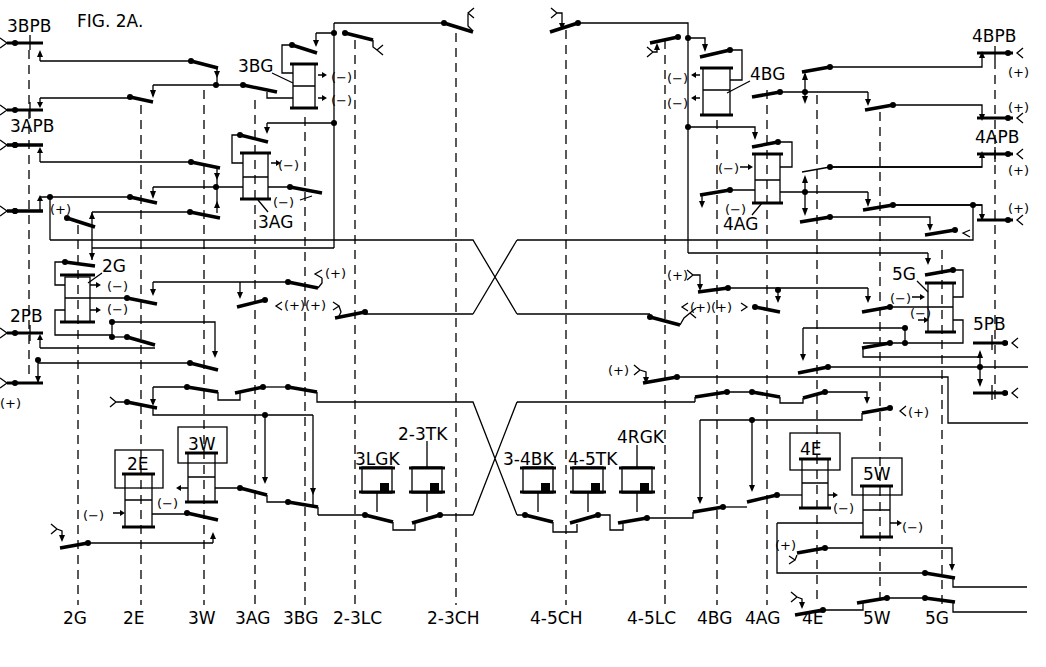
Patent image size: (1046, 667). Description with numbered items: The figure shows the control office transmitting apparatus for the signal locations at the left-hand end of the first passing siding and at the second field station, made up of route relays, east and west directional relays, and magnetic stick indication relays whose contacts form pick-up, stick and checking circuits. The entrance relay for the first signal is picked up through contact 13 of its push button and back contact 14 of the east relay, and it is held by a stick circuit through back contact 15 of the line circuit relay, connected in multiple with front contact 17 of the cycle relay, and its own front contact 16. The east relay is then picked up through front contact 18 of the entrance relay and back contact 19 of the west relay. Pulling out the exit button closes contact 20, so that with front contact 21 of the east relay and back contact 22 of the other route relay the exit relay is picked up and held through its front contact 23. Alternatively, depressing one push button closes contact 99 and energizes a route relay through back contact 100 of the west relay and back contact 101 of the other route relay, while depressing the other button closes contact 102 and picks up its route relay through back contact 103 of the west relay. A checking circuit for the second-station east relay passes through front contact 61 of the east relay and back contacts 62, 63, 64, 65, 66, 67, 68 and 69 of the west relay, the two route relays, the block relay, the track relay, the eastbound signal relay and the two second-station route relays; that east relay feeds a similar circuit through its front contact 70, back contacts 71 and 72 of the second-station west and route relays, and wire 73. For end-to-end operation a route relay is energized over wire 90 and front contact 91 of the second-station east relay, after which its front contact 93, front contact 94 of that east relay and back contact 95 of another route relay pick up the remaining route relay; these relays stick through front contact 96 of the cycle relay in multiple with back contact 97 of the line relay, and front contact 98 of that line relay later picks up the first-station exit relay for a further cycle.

The contact of button 3BPB 99 is at (95, 53).
The back contact of relay 3W 100 is at (205, 61).
The back contact of relay 3AG 101 is at (251, 95).
The contact of button 3APB 102 is at (21, 160).
The back contact of relay 3W 103 is at (207, 160).
The front contact of relay 2E 21 is at (139, 197).
The contact of button 3APB 20 is at (25, 222).
The front contact of relay 3AG 23 is at (247, 138).
The back contact of relay 3BG 22 is at (308, 182).
The back contact of relay 2-3LC 15 is at (373, 54).
The front contact of relay 2-3CH 17 is at (450, 31).
The front contact of relay 4-5CH 96 is at (556, 29).
The back contact of relay 4-5LC 97 is at (648, 57).
The back contact of relay 4BG 95 is at (722, 187).
The front contact of relay 4E 94 is at (866, 228).
The front contact of relay 5G 93 is at (926, 234).
The front contact of relay 2G 16 is at (75, 252).
The back contact of relay 2E 14 is at (152, 341).
The contact of button 2PB 13 is at (95, 362).
The front contact of relay 2E 61 is at (136, 399).
The back contact of relay 3W 62 is at (196, 399).
The back contact of relay 3AG 63 is at (256, 386).
The back contact of relay 3BG 64 is at (304, 386).
The front contact of relay 4-5LC 98 is at (664, 325).
The front contact of relay 4E 91 is at (818, 368).
The wire 90 is at (1001, 373).
The front contact of relay 2G 18 is at (120, 547).
The back contact of relay 3W 19 is at (195, 525).
The back contact of relay 3-4BK 65 is at (547, 528).
The back contact of relay 4-5TK 66 is at (596, 528).
The back contact of relay 4RGK 67 is at (655, 528).
The back contact of relay 4BG 68 is at (720, 520).
The back contact of relay 4AG 69 is at (763, 497).
The front contact of relay 4E 70 is at (813, 611).
The back contact of relay 5W 71 is at (876, 601).
The back contact of relay 5G 72 is at (953, 585).
The wire 73 is at (1000, 612).